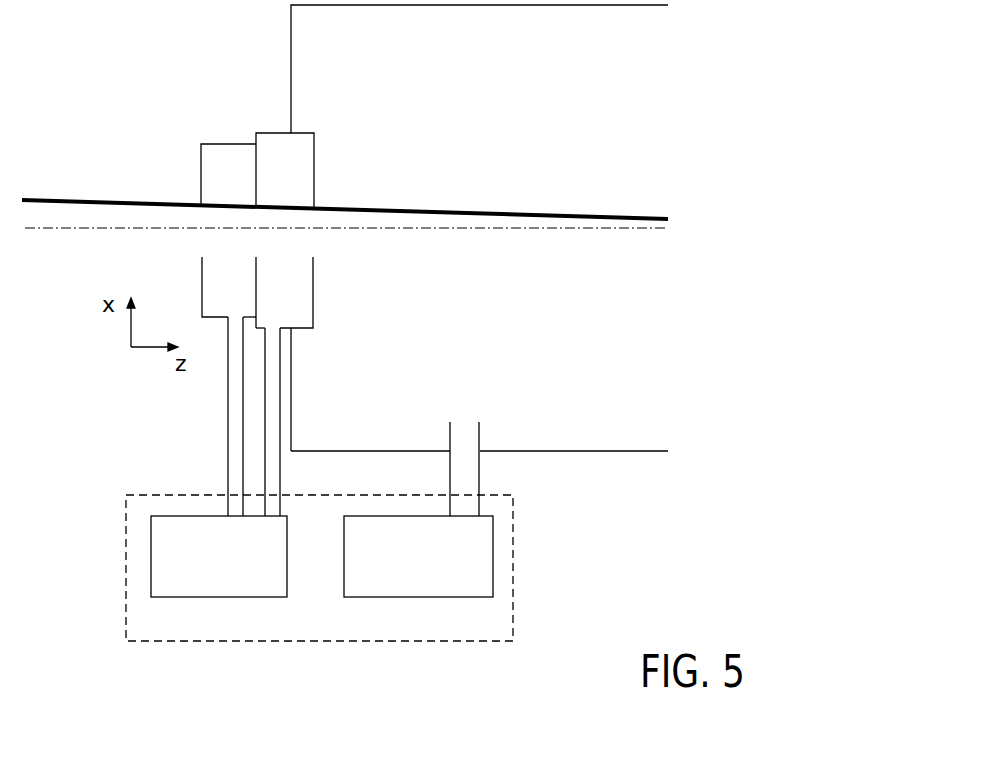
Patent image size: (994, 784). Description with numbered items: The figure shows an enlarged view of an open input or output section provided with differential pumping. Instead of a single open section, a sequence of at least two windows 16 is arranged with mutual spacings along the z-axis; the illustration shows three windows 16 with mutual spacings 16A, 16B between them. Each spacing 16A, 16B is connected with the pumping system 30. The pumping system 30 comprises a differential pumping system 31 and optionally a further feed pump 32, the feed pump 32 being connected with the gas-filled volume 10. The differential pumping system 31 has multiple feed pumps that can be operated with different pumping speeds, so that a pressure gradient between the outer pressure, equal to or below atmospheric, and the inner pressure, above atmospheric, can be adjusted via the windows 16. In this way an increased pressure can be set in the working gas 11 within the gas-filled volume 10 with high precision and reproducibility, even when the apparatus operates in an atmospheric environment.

The gas-filled volume 10 is at (546, 406).
The working gas 11 is at (312, 75).
The windows 16 is at (253, 218).
The spacing 16A is at (230, 276).
The spacing 16B is at (286, 276).
The pumping system 30 is at (494, 634).
The differential pumping system 31 is at (219, 556).
The feed pump 32 is at (418, 556).